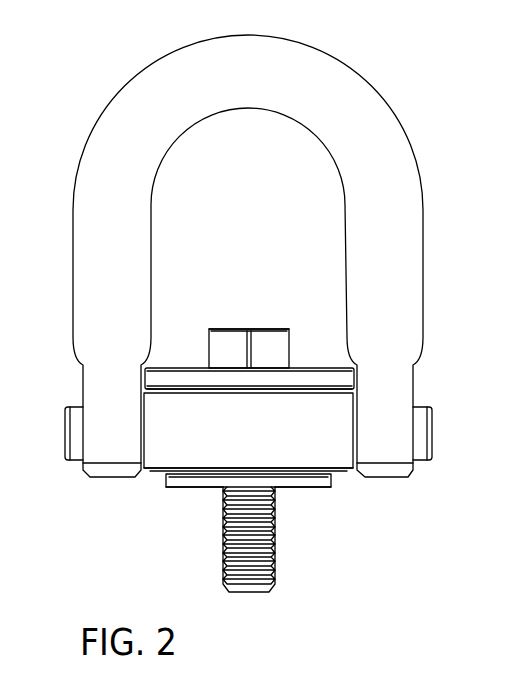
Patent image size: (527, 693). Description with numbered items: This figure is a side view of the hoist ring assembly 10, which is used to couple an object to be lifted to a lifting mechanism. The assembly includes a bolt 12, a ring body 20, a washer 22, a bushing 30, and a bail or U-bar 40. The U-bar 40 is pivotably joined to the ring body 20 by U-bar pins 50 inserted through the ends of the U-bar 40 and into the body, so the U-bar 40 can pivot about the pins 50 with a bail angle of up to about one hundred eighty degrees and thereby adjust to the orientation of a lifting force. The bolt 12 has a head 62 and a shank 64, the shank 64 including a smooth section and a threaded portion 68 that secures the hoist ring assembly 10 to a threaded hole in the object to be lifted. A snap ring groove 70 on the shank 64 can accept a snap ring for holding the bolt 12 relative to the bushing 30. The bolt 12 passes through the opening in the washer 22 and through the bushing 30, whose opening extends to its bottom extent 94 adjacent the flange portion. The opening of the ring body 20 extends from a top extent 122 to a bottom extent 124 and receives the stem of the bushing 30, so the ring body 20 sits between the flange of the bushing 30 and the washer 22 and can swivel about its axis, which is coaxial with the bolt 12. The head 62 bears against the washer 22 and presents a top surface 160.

The hoist ring assembly 10 is at (389, 56).
The bolt 12 is at (267, 338).
The ring body 20 is at (157, 448).
The washer 22 is at (173, 378).
The bushing 30 is at (167, 476).
The U-bar 40 is at (398, 148).
The U-bar pins 50 is at (65, 430).
The head 62 is at (275, 348).
The shank 64 is at (272, 538).
The threaded portion 68 is at (272, 572).
The snap ring groove 70 is at (283, 496).
The bottom extent 94 is at (190, 498).
The top extent 122 is at (340, 381).
The bottom extent 124 is at (346, 475).
The top surface 160 is at (229, 320).